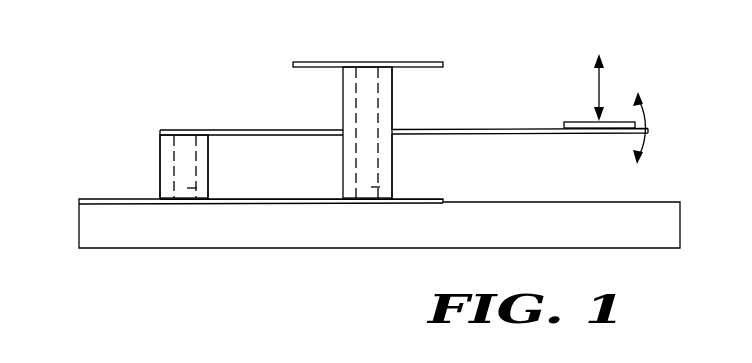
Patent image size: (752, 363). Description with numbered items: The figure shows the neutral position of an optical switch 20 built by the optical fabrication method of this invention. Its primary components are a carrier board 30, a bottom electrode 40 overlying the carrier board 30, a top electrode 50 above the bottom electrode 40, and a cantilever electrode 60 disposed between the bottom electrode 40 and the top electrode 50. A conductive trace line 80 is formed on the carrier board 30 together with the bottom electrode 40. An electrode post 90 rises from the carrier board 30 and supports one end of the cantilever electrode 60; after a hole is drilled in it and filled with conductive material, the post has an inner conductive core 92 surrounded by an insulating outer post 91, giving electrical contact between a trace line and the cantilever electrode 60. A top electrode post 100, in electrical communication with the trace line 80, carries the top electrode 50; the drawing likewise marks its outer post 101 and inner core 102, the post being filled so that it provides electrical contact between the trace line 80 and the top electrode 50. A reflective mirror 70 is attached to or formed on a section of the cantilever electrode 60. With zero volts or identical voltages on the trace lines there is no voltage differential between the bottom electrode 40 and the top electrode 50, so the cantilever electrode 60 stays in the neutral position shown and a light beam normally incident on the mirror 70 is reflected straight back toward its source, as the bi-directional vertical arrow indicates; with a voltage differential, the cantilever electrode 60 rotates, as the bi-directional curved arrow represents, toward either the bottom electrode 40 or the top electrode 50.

The optical switch 20 is at (373, 276).
The carrier board 30 is at (152, 250).
The bottom electrode 40 is at (437, 199).
The top electrode 50 is at (312, 60).
The cantilever electrode 60 is at (462, 128).
The reflective mirror 70 is at (583, 122).
The conductive trace line 80 is at (263, 199).
The electrode post 90 is at (140, 157).
The insulating outer post 91 is at (167, 148).
The inner conductive core 92 is at (207, 185).
The top electrode post 100 is at (321, 112).
The post upper portion 101 is at (389, 102).
The post lower portion 102 is at (389, 183).